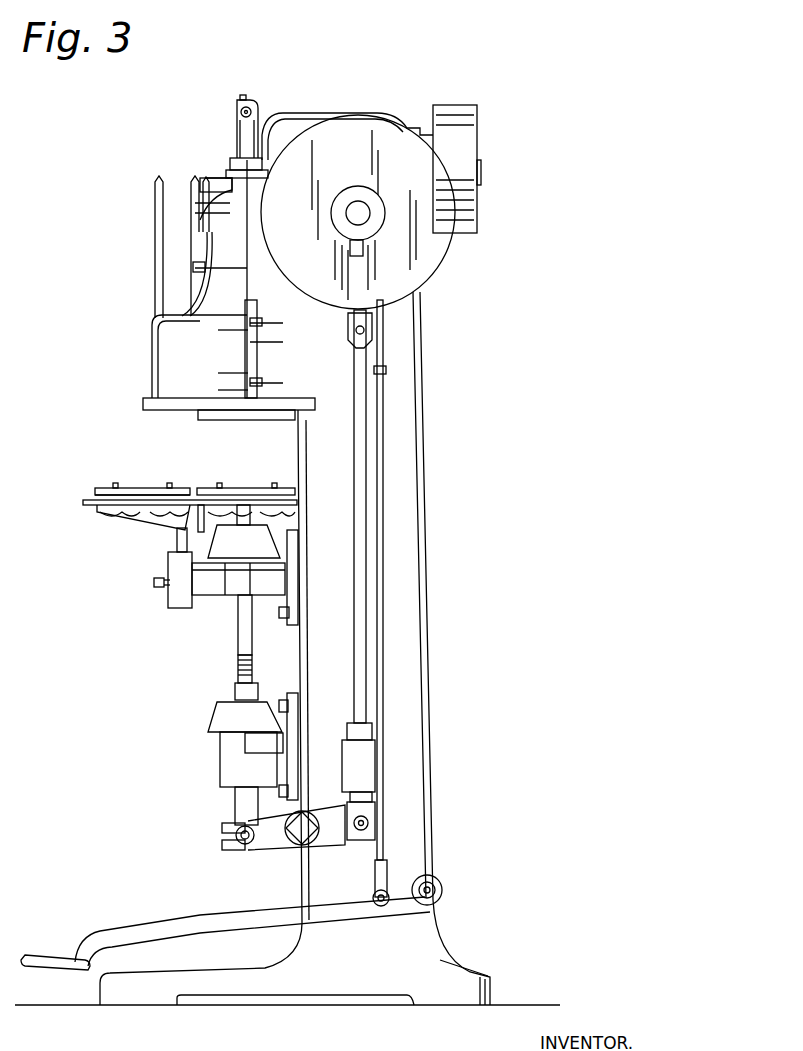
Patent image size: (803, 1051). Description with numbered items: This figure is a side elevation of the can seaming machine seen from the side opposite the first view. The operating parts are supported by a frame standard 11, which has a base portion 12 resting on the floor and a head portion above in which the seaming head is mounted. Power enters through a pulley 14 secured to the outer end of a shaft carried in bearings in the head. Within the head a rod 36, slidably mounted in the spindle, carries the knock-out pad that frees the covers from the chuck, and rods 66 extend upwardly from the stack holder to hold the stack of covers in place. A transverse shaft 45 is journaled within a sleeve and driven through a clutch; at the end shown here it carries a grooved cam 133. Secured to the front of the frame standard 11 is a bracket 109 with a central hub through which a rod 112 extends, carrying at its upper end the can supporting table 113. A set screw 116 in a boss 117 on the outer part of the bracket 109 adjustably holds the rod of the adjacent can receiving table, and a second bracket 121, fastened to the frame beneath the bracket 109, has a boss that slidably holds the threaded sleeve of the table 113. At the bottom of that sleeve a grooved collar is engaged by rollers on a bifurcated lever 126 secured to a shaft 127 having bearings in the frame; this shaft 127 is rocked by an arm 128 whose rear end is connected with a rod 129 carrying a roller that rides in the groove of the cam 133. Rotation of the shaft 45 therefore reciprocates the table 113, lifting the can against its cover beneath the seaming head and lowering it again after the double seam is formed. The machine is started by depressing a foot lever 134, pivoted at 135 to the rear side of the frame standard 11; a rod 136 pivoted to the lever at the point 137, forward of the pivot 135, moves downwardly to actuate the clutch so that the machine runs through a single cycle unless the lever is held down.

The frame standard 11 is at (415, 703).
The base portion 12 is at (160, 976).
The pulley 14 is at (455, 119).
The rod 36 is at (240, 142).
The transverse shaft 45 is at (362, 212).
The rods 66 is at (194, 263).
The bracket 109 is at (291, 622).
The rod 112 is at (240, 625).
The can supporting table 113 is at (250, 500).
The set screw 116 is at (157, 586).
The boss 117 is at (178, 600).
The bracket 121 is at (298, 732).
The bifurcated lever 126 is at (272, 845).
The shaft 127 is at (318, 846).
The arm 128 is at (341, 814).
The rod 129 is at (366, 553).
The cam 133 is at (425, 271).
The foot lever 134 is at (115, 931).
The pivot 135 is at (434, 882).
The rod 136 is at (381, 687).
The pivot point 137 is at (388, 884).